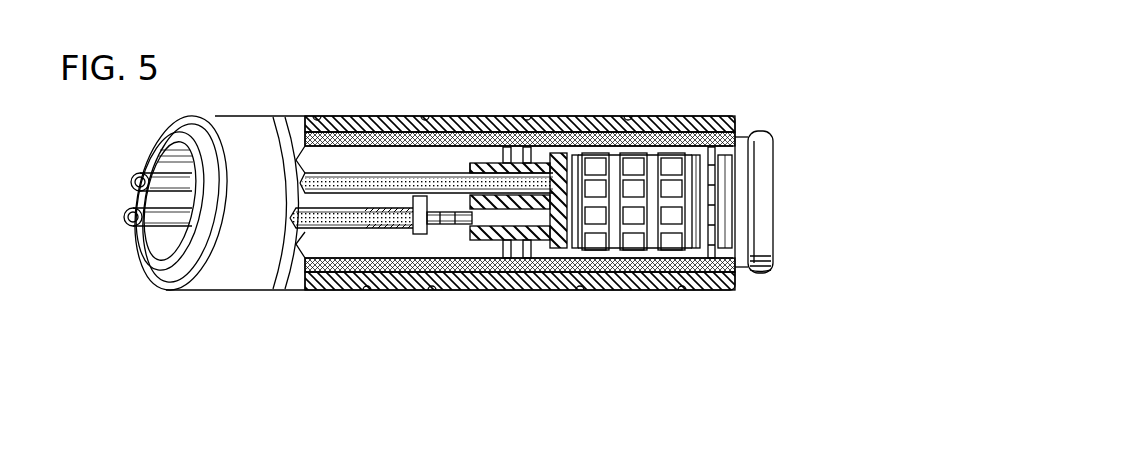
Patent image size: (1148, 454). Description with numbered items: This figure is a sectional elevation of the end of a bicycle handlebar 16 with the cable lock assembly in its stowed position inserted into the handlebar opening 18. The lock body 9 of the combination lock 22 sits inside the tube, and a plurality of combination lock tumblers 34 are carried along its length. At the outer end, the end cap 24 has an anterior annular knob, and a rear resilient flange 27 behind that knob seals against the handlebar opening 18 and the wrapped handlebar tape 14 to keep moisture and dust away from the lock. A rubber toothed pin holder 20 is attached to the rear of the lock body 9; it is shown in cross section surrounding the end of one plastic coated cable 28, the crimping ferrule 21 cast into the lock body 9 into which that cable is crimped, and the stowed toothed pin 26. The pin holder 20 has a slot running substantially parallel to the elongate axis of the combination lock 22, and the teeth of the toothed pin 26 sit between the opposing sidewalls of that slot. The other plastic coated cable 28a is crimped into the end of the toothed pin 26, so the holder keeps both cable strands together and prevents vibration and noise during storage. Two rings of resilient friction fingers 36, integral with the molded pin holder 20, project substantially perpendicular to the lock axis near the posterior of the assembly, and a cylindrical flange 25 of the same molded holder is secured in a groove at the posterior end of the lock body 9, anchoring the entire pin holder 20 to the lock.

The lock body 9 is at (698, 243).
The handlebar tape 14 is at (502, 116).
The handlebar 16 is at (337, 116).
The handlebar opening 18 is at (737, 262).
The rubber toothed pin holder 20 is at (483, 163).
The crimping ferrule 21 is at (543, 116).
The combination lock 22 is at (588, 163).
The end cap 24 is at (773, 220).
The cylindrical flange 25 is at (573, 155).
The toothed pin 26 is at (447, 228).
The rear resilient flange 27 is at (748, 263).
The plastic coated cable 28 is at (413, 173).
The plastic coated cable 28a is at (380, 218).
The combination lock tumblers 34 is at (688, 156).
The resilient friction fingers 36 is at (715, 178).